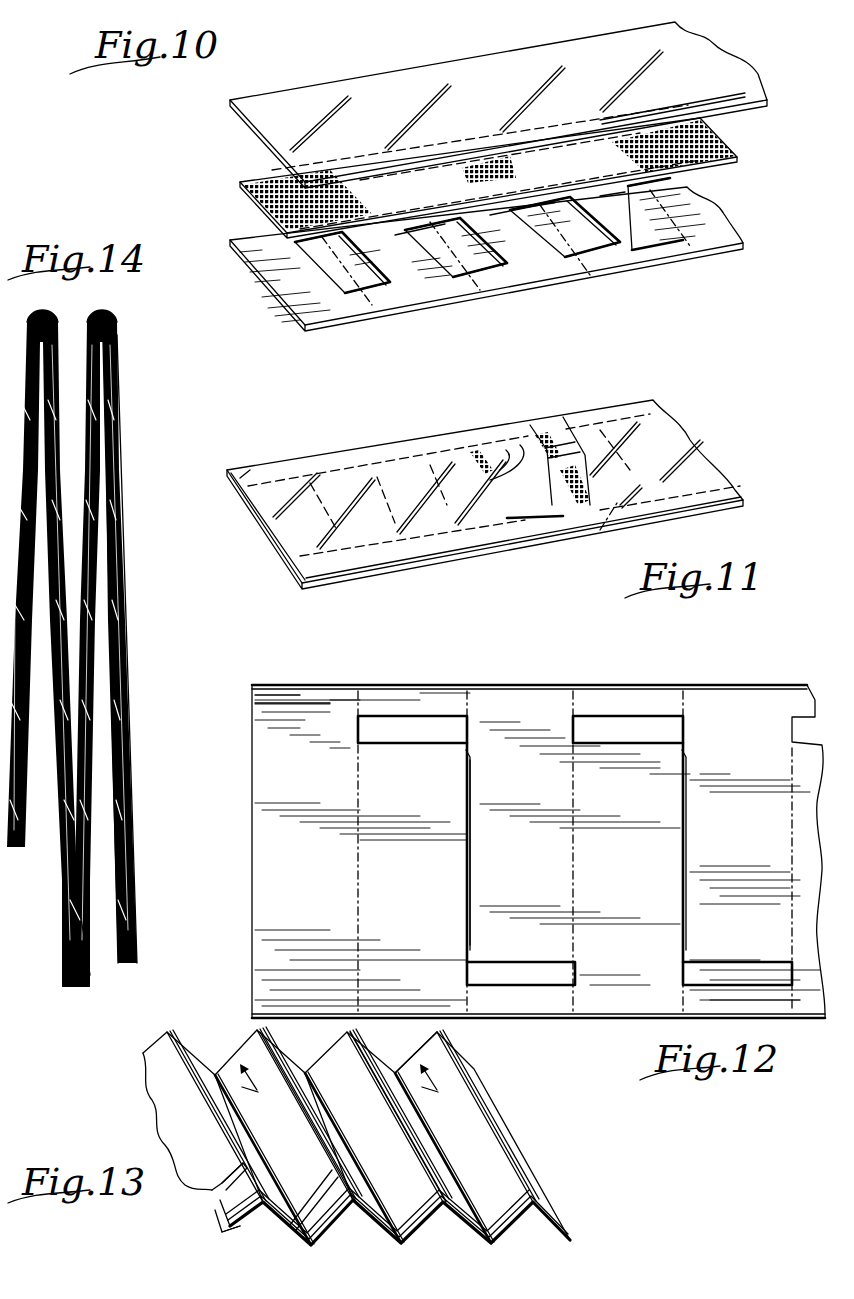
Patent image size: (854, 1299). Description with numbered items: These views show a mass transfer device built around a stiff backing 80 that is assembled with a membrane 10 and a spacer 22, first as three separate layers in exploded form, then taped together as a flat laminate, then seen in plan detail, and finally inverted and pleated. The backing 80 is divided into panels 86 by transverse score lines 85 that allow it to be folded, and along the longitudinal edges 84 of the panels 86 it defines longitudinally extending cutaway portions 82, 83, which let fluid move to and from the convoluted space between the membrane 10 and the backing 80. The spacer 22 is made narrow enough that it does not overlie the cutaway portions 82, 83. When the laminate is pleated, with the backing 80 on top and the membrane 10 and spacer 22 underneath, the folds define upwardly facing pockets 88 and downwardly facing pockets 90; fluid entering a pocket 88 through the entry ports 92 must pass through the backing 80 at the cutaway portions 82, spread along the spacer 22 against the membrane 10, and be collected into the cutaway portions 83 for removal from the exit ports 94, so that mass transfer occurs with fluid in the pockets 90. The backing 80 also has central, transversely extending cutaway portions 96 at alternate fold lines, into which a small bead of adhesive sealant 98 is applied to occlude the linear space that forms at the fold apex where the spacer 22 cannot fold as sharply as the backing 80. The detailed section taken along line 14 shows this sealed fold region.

In FIG. 10, the membrane 10 is at (612, 71).
In FIG. 11, the membrane 10 is at (327, 487).
In FIG. 13, the membrane 10 is at (245, 1236).
In FIG. 14, the membrane 10 is at (128, 773).
In FIG. 10, the spacer 22 is at (626, 159).
In FIG. 11, the spacer 22 is at (490, 480).
In FIG. 13, the spacer 22 is at (227, 1193).
In FIG. 14, the spacer 22 is at (123, 597).
In FIG. 10, the backing 80 is at (486, 264).
In FIG. 11, the backing 80 is at (540, 540).
In FIG. 12, the backing 80 is at (302, 684).
In FIG. 13, the backing 80 is at (462, 1137).
In FIG. 14, the backing 80 is at (118, 677).
In FIG. 10, the cutaway portion 82 is at (430, 290).
In FIG. 12, the cutaway portion 82 is at (558, 977).
In FIG. 13, the cutaway portion 82 is at (335, 1182).
In FIG. 12, the cutaway portion 83 is at (405, 727).
In FIG. 13, the cutaway portion 83 is at (397, 1073).
In FIG. 14, the cutaway portion 83 is at (196, 1014).
In FIG. 12, the longitudinal edge 84 is at (540, 684).
In FIG. 10, the transverse score line 85 is at (552, 283).
In FIG. 12, the transverse score line 85 is at (355, 884).
In FIG. 12, the panel 86 is at (535, 871).
In FIG. 13, the pocket 88 is at (326, 1066).
In FIG. 13, the pocket 90 is at (452, 1234).
In FIG. 13, the entry port 92 is at (333, 1190).
In FIG. 13, the exit port 94 is at (360, 1048).
In FIG. 12, the central cutaway portion 96 is at (463, 871).
In FIG. 13, the central cutaway portion 96 is at (312, 1125).
In FIG. 14, the adhesive sealant bead 98 is at (103, 312).
In FIG. 13, the section line 14 is at (349, 1086).